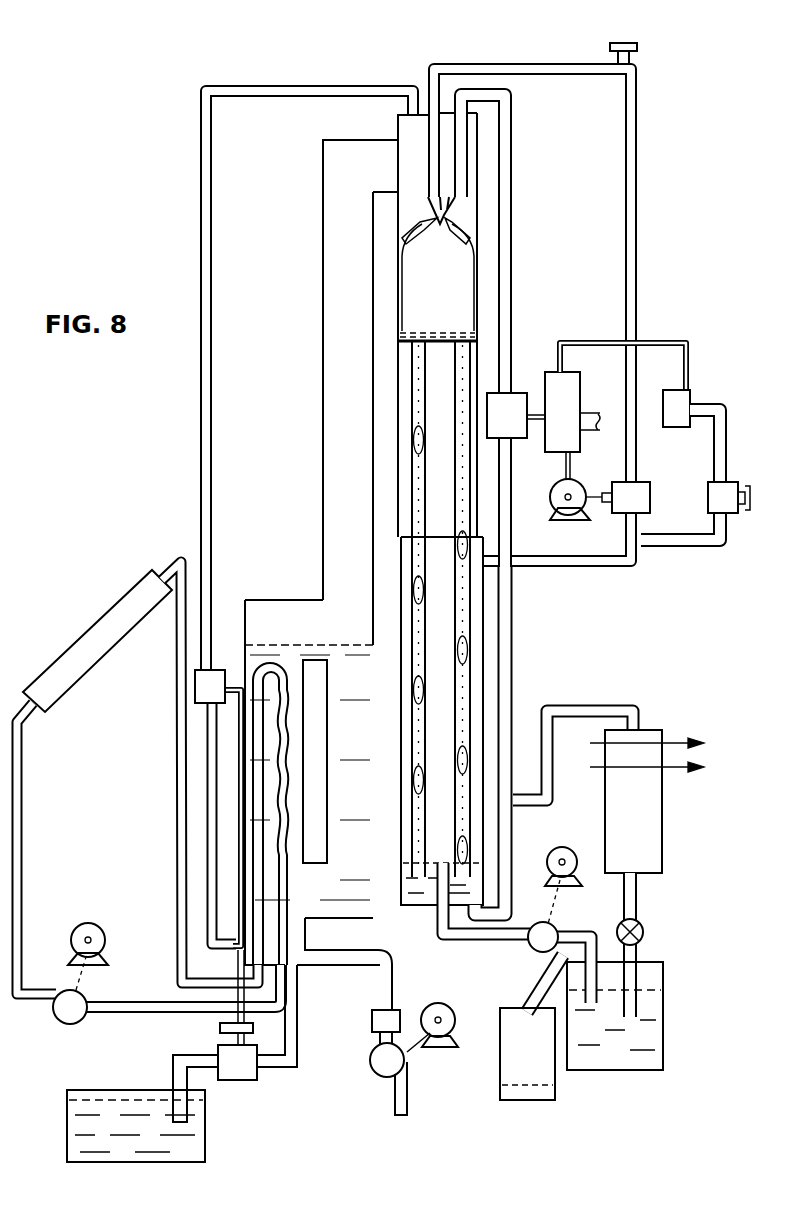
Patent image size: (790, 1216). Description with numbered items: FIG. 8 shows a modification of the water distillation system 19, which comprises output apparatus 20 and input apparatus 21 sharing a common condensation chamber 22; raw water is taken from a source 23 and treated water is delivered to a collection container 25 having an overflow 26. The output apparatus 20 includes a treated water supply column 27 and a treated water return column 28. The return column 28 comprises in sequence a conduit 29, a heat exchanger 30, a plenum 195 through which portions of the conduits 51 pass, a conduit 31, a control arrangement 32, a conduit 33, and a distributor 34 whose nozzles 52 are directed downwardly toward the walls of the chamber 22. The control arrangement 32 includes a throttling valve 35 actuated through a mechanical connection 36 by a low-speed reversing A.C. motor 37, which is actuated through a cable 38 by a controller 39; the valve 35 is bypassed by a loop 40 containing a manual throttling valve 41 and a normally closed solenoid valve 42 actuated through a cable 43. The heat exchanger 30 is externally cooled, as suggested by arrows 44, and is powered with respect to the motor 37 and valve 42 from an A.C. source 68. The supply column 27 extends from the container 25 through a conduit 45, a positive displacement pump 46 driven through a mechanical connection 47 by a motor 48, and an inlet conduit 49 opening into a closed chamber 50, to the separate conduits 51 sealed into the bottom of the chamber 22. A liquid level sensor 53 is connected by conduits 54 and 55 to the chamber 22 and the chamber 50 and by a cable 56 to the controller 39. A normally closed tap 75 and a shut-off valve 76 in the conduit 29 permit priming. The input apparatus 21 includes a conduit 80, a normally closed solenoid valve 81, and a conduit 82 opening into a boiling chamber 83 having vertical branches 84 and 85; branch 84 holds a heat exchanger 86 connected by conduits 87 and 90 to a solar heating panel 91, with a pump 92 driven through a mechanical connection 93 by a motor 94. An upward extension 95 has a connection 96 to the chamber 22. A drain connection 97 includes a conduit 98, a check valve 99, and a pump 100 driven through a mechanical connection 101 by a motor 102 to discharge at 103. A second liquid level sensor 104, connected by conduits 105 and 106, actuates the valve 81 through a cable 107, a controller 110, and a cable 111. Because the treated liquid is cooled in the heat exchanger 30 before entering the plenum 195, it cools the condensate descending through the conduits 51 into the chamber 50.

The water distillation system 19 is at (176, 178).
The output apparatus 20 is at (566, 193).
The input apparatus 21 is at (265, 241).
The condensation chamber 22 is at (437, 325).
The source 23 is at (67, 1128).
The collection container 25 is at (664, 1013).
The overflow 26 is at (540, 1000).
The treated water supply column 27 is at (470, 525).
The treated water return column 28 is at (630, 705).
The conduit 29 is at (638, 956).
The heat exchanger 30 is at (663, 831).
The conduit 31 is at (637, 567).
The control arrangement 32 is at (673, 455).
The conduit 33 is at (641, 138).
The distributor 34 is at (430, 203).
The throttling valve 35 is at (622, 514).
The mechanical connection 36 is at (606, 493).
The low-speed reversing A.C. motor 37 is at (555, 512).
The cable 38 is at (552, 483).
The controller 39 is at (580, 377).
The loop 40 is at (727, 407).
The manual throttling valve 41 is at (709, 498).
The normally closed solenoid valve 42 is at (688, 394).
The cable 43 is at (661, 342).
The arrows 44 is at (675, 742).
The conduit 45 is at (598, 930).
The positive displacement pump 46 is at (538, 951).
The mechanical connection 47 is at (564, 895).
The motor 48 is at (561, 846).
The inlet conduit 49 is at (474, 941).
The closed chamber 50 is at (418, 905).
The separate conduits 51 is at (428, 522).
The nozzles 52 is at (452, 216).
The liquid level sensor 53 is at (514, 394).
The conduit 54 is at (513, 303).
The conduit 55 is at (515, 760).
The cable 56 is at (540, 422).
The A.C. source 68 is at (597, 405).
The normally closed tap 75 is at (626, 44).
The shut-off valve 76 is at (641, 926).
The conduit 80 is at (173, 1070).
The normally closed solenoid valve 81 is at (246, 1078).
The conduit 82 is at (298, 1032).
The boiling chamber 83 is at (375, 722).
The branch 84 is at (300, 718).
The branch 85 is at (318, 805).
The heat exchanger 86 is at (300, 830).
The conduit 87 is at (177, 795).
The conduit 90 is at (23, 830).
The solar heating panel 91 is at (68, 690).
The pump 92 is at (62, 1024).
The mechanical connection 93 is at (85, 980).
The motor 94 is at (100, 931).
The upward extension 95 is at (322, 401).
The connection 96 is at (360, 140).
The drain connection 97 is at (378, 1010).
The conduit 98 is at (332, 952).
The check valve 99 is at (398, 1016).
The pump 100 is at (378, 1070).
The mechanical connection 101 is at (420, 1050).
The motor 102 is at (450, 1010).
The discharge 103 is at (408, 1111).
The second liquid level sensor 104 is at (195, 686).
The conduit 105 is at (213, 358).
The conduit 106 is at (207, 848).
The cable 107 is at (232, 997).
The controller 110 is at (219, 1028).
The cable 111 is at (247, 1038).
The plenum 195 is at (485, 660).